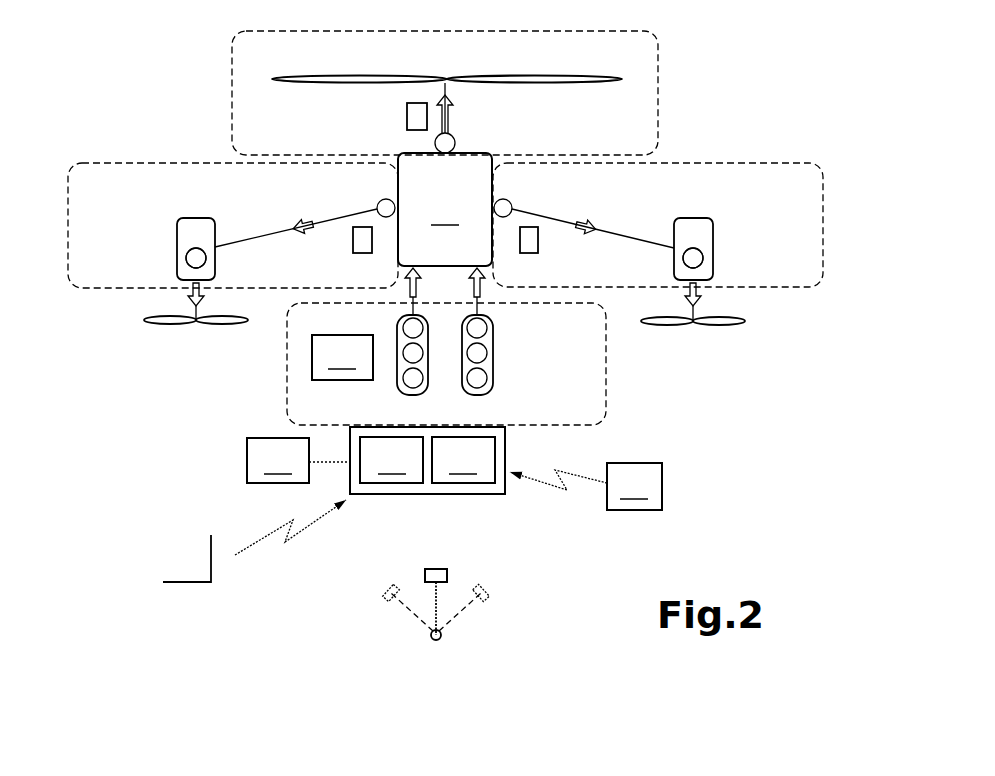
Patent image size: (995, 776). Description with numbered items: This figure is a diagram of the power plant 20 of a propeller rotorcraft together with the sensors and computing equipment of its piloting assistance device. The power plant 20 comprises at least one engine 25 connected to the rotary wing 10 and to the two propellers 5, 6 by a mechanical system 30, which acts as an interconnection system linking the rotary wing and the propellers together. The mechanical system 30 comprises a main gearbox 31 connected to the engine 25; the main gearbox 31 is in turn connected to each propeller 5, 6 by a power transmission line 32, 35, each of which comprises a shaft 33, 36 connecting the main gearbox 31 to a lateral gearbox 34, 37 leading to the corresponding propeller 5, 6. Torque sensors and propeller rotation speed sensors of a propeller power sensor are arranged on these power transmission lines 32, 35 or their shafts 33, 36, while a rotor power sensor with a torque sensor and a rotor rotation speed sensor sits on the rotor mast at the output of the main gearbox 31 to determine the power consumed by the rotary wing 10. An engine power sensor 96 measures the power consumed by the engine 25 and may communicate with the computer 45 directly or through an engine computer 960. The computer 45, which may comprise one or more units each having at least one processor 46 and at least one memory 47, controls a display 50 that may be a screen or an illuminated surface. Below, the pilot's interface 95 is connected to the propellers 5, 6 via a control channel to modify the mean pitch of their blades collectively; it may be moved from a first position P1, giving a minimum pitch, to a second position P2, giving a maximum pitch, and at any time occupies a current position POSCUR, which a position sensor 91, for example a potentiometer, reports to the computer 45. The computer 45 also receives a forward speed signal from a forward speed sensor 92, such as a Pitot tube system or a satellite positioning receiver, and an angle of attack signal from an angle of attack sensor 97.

The rotary wing 10 is at (632, 79).
The power transmission line 32 is at (132, 163).
The power transmission line 35 is at (788, 164).
The main gearbox 31 is at (444, 234).
The shaft 33 is at (273, 233).
The lateral gearbox 34 is at (177, 237).
The propeller 5 is at (157, 338).
The mechanical system 30 is at (272, 310).
The shaft 36 is at (613, 232).
The lateral gearbox 37 is at (714, 248).
The propeller 6 is at (696, 347).
The power plant 20 is at (606, 372).
The engine power sensor 96 is at (342, 357).
The engine computer 960 is at (312, 372).
The engine 25 is at (397, 372).
The display 50 is at (298, 460).
The computer 45 is at (507, 490).
The processor 46 is at (391, 460).
The memory 47 is at (463, 460).
The angle of attack sensor 97 is at (586, 486).
The forward speed sensor 92 is at (186, 598).
The current position POSCUR is at (438, 569).
The position sensor 91 is at (442, 636).
The interface 95 is at (431, 649).
The first position P1 is at (383, 590).
The second position P2 is at (493, 583).